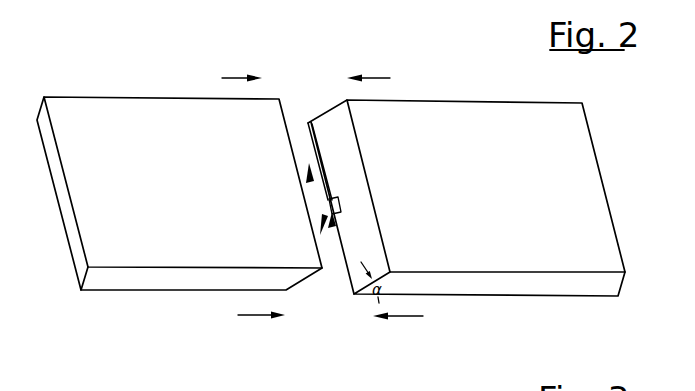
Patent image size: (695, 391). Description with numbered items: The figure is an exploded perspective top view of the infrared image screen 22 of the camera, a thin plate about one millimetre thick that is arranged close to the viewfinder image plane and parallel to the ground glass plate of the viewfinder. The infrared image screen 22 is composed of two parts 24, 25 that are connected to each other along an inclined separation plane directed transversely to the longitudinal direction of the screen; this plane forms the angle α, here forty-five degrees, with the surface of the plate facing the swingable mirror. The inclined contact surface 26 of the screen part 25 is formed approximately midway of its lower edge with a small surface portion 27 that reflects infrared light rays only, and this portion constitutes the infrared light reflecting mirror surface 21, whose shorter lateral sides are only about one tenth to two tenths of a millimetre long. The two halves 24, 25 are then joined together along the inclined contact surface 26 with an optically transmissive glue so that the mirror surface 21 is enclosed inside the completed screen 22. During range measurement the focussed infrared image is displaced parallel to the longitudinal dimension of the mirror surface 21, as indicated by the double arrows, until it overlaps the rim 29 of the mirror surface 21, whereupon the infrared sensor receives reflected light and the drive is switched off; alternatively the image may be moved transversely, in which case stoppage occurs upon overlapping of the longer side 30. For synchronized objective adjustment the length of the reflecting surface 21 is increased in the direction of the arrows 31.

The infrared light reflecting mirror surface 21 is at (338, 250).
The infrared image screen 22 is at (582, 202).
The screen part 24 is at (90, 117).
The screen part 25 is at (465, 112).
The inclined contact surface 26 is at (337, 120).
The surface portion 27 is at (346, 250).
The rim of the infrared mirror surface 29 is at (316, 140).
The longer side of the mirror surface 30 is at (315, 222).
The arrows indicating direction of length increase 31 is at (317, 193).